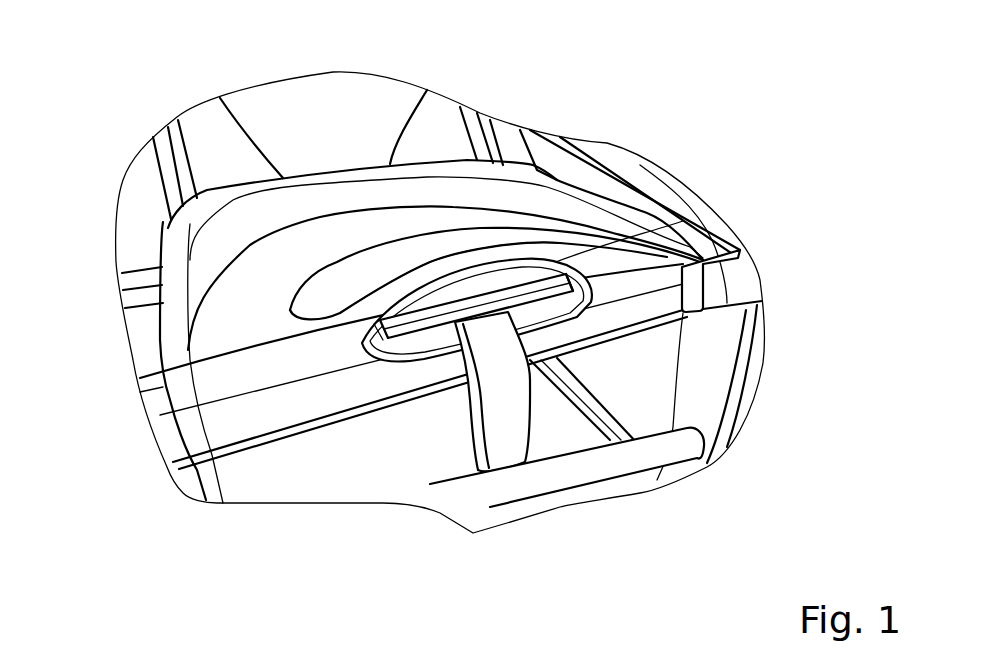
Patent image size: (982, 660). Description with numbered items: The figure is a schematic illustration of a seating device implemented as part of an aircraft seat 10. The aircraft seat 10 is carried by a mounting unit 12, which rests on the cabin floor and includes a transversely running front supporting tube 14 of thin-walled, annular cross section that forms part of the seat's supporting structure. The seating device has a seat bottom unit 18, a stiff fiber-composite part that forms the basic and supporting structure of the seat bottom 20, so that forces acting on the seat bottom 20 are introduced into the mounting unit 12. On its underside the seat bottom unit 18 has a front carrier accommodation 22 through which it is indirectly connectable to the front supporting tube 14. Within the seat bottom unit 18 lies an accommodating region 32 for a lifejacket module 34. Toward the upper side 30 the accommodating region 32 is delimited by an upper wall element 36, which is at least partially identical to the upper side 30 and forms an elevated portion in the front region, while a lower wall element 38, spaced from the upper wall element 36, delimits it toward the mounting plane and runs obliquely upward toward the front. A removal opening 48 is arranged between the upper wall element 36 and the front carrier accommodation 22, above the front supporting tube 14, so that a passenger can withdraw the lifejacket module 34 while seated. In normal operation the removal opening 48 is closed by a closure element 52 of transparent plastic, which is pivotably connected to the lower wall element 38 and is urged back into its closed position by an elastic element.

The aircraft seat 10 is at (158, 219).
The mounting unit 12 is at (759, 372).
The front supporting tube 14 is at (736, 288).
The seat bottom unit 18 is at (313, 205).
The seat bottom 20 is at (152, 327).
The front carrier accommodation 22 is at (711, 268).
The upper side 30 is at (255, 268).
The accommodating region 32 is at (428, 330).
The lifejacket module 34 is at (516, 284).
The upper wall element 36 is at (467, 260).
The lower wall element 38 is at (603, 440).
The removal opening 48 is at (574, 294).
The closure element 52 is at (510, 438).